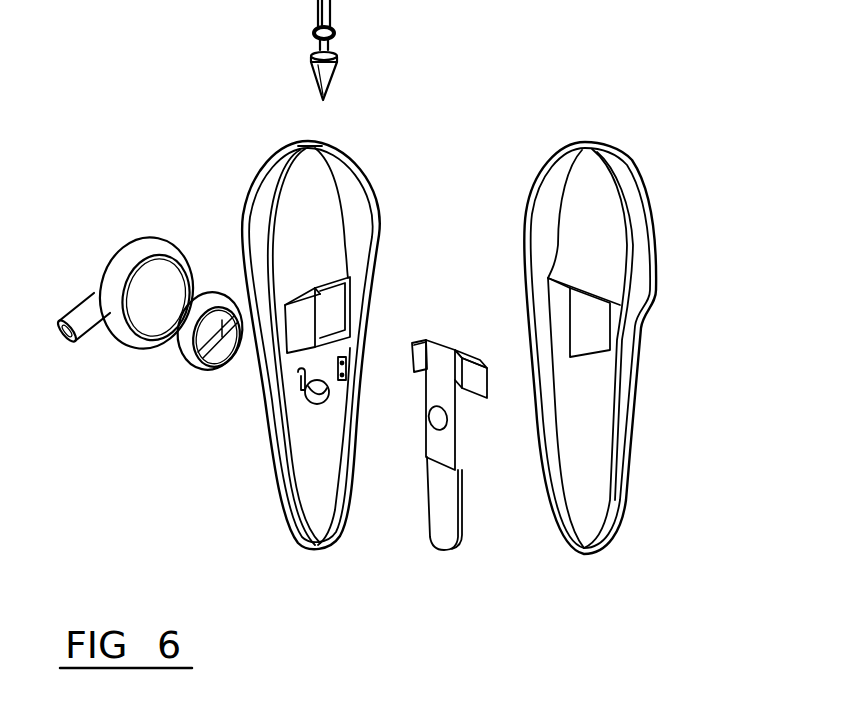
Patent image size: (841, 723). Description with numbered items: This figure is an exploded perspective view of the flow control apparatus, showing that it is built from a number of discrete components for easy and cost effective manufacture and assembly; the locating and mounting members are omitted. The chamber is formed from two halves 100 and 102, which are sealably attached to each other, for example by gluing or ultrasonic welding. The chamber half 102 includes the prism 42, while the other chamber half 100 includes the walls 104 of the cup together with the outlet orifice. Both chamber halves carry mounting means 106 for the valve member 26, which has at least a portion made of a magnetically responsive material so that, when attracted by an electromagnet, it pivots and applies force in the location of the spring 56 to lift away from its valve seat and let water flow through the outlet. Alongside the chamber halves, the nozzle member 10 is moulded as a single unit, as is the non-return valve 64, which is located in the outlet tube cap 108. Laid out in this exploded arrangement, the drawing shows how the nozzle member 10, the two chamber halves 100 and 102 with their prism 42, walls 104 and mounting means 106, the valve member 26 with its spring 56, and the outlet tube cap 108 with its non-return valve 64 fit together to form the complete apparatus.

The nozzle member 10 is at (334, 47).
The chamber half 100 is at (358, 166).
The chamber half 102 is at (642, 176).
The walls 104 is at (300, 318).
The mounting means 106 is at (348, 356).
The outlet tube cap 108 is at (117, 337).
The non-return valve 64 is at (193, 363).
The valve member 26 is at (458, 447).
The prism 42 is at (596, 340).
The spring 56 is at (292, 468).